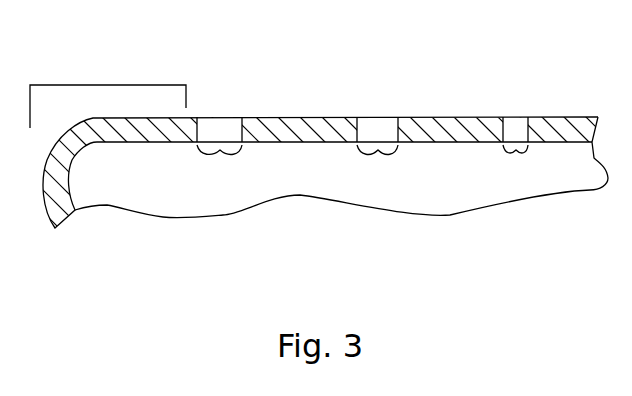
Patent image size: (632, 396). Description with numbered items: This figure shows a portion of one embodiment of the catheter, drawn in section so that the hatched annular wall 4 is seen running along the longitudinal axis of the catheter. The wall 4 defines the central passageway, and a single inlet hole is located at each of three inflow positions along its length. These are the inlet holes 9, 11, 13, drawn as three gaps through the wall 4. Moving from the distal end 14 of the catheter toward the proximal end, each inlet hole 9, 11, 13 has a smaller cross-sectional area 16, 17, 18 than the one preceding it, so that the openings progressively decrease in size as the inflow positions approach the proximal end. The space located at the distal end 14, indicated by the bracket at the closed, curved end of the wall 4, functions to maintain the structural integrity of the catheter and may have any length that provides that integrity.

The annular wall 4 is at (302, 130).
The inlet hole 9 is at (223, 127).
The inlet hole 11 is at (377, 130).
The inlet hole 13 is at (512, 133).
The distal end 14 is at (108, 89).
The cross-sectional area 16 is at (219, 160).
The cross-sectional area 17 is at (377, 160).
The cross-sectional area 18 is at (516, 160).